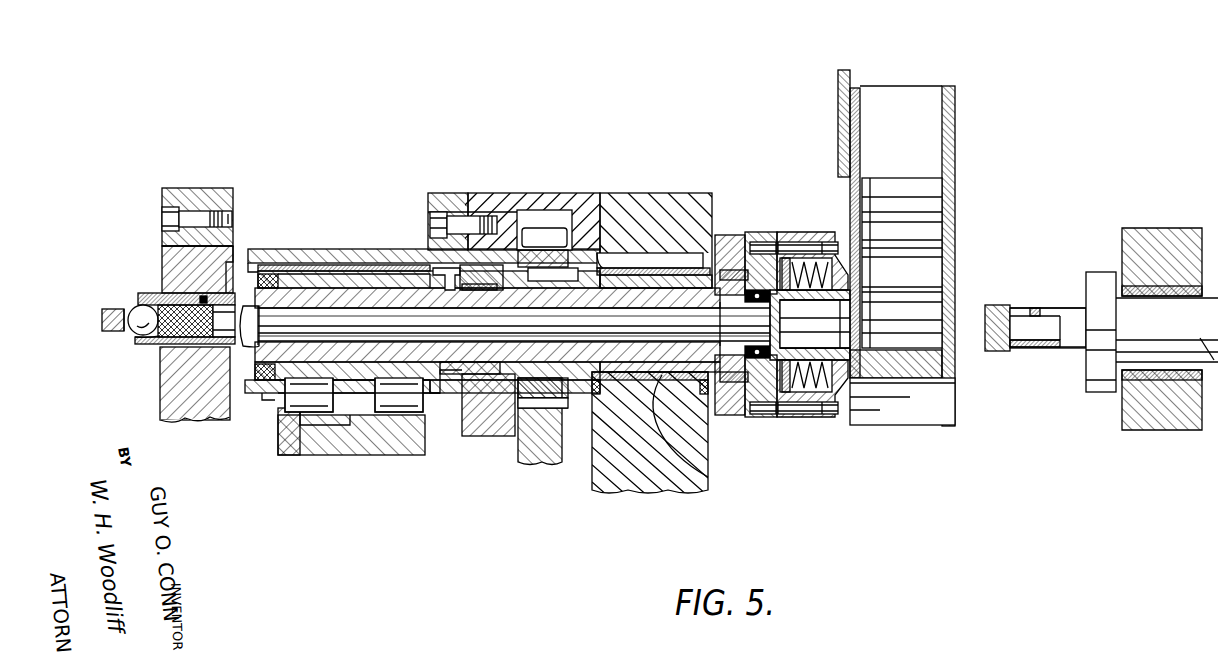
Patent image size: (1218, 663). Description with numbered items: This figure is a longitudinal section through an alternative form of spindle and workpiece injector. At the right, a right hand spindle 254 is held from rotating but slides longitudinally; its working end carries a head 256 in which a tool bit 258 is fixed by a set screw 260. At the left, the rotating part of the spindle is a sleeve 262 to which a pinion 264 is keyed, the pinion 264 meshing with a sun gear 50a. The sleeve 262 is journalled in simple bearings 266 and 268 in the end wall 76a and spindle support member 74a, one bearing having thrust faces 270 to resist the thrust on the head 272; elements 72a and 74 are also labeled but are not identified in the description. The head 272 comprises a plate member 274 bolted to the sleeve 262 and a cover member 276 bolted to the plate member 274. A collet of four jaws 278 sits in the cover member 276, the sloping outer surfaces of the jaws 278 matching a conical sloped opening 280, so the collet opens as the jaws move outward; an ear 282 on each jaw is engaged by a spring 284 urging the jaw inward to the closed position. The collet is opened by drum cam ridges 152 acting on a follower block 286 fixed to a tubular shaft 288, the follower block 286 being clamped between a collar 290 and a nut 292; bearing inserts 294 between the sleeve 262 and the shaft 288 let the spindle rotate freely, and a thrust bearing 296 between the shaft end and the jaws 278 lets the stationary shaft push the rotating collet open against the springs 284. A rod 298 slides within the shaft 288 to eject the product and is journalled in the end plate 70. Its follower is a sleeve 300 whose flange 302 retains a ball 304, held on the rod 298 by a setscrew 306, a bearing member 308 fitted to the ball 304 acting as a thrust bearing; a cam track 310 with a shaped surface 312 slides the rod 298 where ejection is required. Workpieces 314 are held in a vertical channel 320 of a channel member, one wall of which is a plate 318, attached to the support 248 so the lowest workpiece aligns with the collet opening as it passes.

The end plate 70 is at (178, 188).
The setscrew 306 is at (200, 297).
The sleeve 300 is at (150, 306).
The ball 304 is at (146, 296).
The cam track 310 is at (110, 318).
The surface 312 is at (150, 337).
The flange 302 is at (170, 338).
The bearing member 308 is at (162, 343).
The bracket plate 72a is at (262, 250).
The rod 298 is at (283, 312).
The follower block 286 is at (338, 252).
The nut 292 is at (262, 380).
The spindle support member 74a is at (484, 195).
The bearing 266 is at (504, 240).
The pinion 264 is at (553, 225).
The end wall 76a is at (656, 195).
The bearing 268 is at (662, 262).
The thrust faces 270 is at (736, 236).
The thrust bearing 296 is at (748, 280).
The head 272 is at (795, 205).
The conical sloped opening 280 is at (848, 280).
The support 248 is at (843, 90).
The channel 320 is at (944, 110).
The plate 318 is at (861, 120).
The workpieces 314 is at (930, 192).
The frame member 74 is at (1152, 230).
The set screw 260 is at (1036, 306).
The head 256 is at (1078, 312).
The right hand spindle 254 is at (1174, 330).
The tool bit 258 is at (992, 352).
The jaws 278 is at (855, 360).
The bearing inserts 294 is at (490, 308).
The drum cam ridges 152 is at (354, 428).
The collar 290 is at (440, 368).
The tubular shaft 288 is at (505, 380).
The sun gear 50a is at (538, 455).
The sleeve 262 is at (700, 478).
The plate member 274 is at (738, 418).
The ear 282 is at (782, 418).
The spring 284 is at (824, 412).
The cover member 276 is at (830, 405).